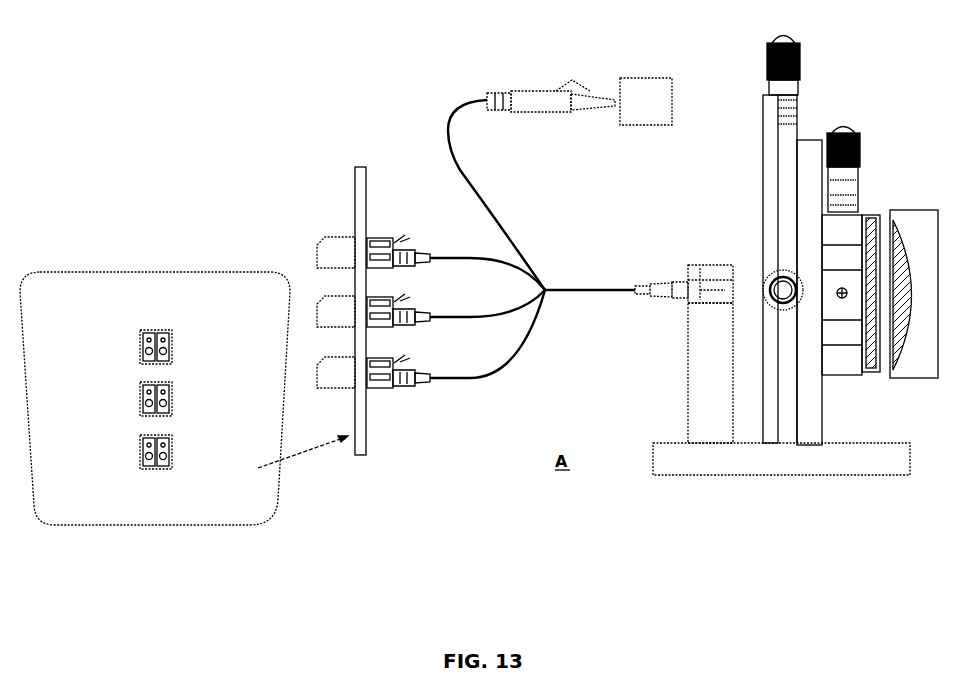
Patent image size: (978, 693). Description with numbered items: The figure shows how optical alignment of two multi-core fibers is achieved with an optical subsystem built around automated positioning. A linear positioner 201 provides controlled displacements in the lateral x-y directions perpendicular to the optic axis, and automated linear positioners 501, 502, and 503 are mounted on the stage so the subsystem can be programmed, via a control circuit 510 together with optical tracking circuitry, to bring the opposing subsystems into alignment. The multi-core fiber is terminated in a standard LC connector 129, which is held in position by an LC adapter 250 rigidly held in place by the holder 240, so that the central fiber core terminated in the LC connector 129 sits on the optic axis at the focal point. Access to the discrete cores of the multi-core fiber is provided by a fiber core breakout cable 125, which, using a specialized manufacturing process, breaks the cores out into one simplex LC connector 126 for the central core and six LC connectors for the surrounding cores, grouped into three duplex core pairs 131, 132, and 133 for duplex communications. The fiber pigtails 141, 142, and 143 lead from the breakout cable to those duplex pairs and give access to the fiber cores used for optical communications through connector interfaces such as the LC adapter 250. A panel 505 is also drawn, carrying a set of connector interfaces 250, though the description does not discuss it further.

The fiber core breakout cable 125 is at (597, 285).
The simplex LC connector 126 is at (544, 94).
The LC connector 129 is at (672, 282).
The duplex core pair connector 131 is at (425, 255).
The duplex core pair connector 132 is at (437, 325).
The duplex core pair connector 133 is at (430, 390).
The fiber pigtail 141 is at (492, 245).
The fiber pigtail 142 is at (500, 300).
The fiber pigtail 143 is at (503, 357).
The linear positioner 201 is at (810, 140).
The adapter holder 240 is at (690, 360).
The LC adapter 250 is at (153, 330).
The automated linear positioner 501 is at (765, 58).
The automated linear positioner 502 is at (862, 150).
The automated linear positioner 503 is at (763, 288).
The panel 505 is at (200, 285).
The control circuit 510 is at (641, 82).